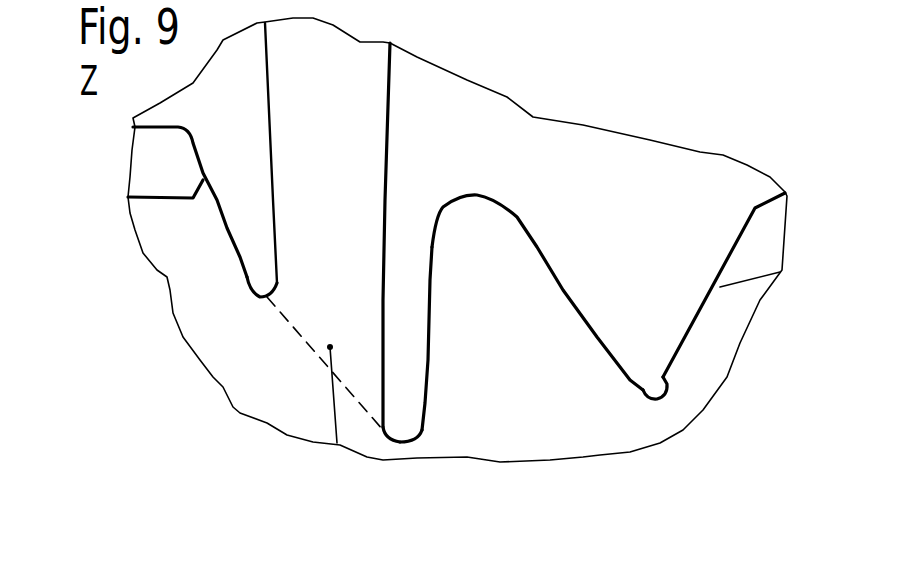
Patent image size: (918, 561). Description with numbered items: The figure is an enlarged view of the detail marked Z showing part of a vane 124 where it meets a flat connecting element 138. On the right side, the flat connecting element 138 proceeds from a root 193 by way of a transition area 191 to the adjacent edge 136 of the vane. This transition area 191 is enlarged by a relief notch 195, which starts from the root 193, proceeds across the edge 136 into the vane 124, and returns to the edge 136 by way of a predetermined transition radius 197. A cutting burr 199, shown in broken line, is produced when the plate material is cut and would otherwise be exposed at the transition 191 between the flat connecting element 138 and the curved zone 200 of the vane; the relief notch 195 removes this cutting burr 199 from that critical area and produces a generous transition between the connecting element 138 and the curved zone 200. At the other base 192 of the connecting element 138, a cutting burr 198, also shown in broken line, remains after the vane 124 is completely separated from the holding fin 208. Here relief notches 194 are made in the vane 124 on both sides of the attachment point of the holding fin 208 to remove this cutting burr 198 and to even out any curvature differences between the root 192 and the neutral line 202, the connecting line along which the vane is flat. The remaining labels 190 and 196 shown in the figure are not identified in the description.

The vane 124 is at (675, 400).
The edge of the vane 136 is at (227, 228).
The connecting element 138 is at (503, 252).
The slot 190 is at (403, 437).
The transition area 191 is at (650, 383).
The base of the connecting element 192 is at (417, 440).
The root of the connecting element 193 is at (645, 400).
The relief notches 194 is at (257, 293).
The relief notch 195 is at (643, 400).
The cutting corner 196 is at (247, 287).
The transition radius 197 is at (667, 378).
The cutting burr 198 is at (298, 347).
The cutting burr 199 is at (647, 377).
The curved zone 200 is at (663, 400).
The neutral line 202 is at (347, 437).
The holding fin 208 is at (333, 287).